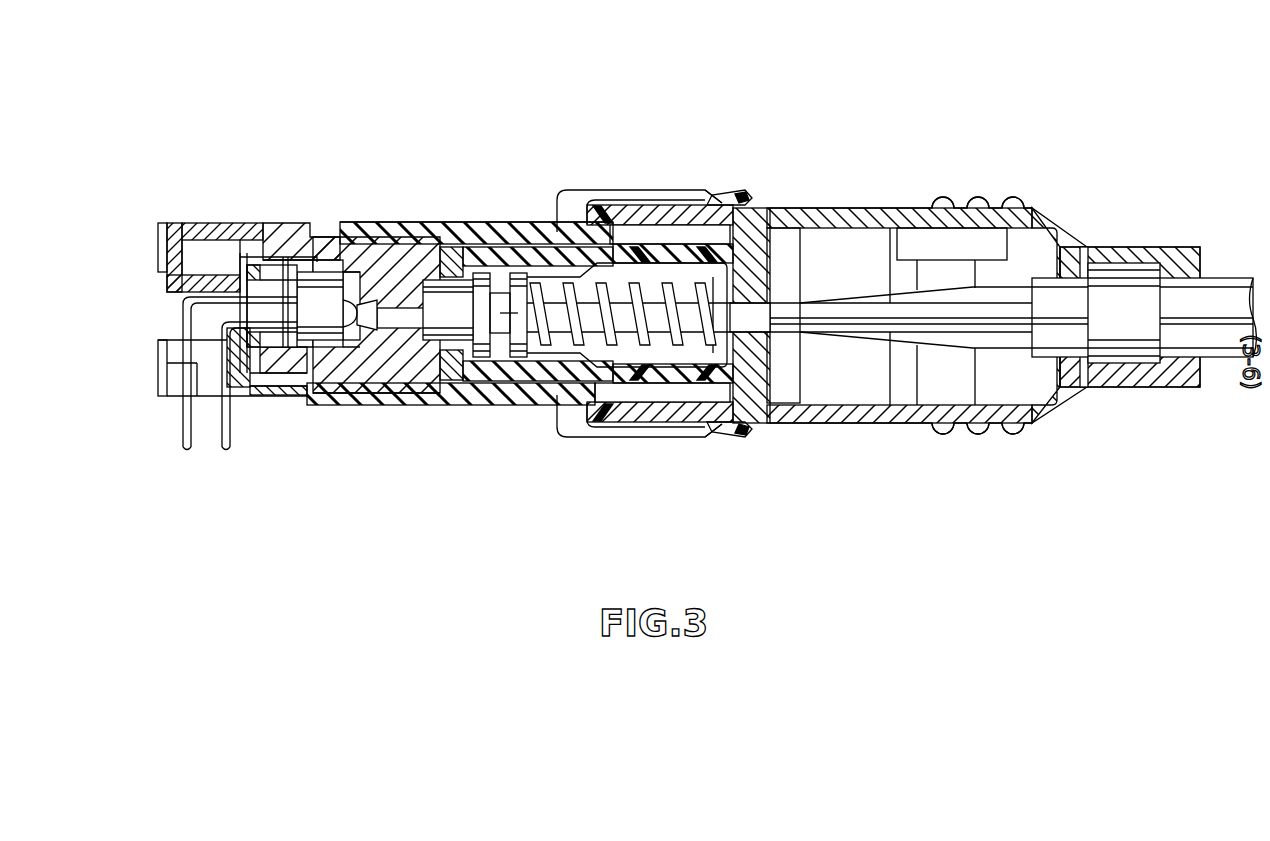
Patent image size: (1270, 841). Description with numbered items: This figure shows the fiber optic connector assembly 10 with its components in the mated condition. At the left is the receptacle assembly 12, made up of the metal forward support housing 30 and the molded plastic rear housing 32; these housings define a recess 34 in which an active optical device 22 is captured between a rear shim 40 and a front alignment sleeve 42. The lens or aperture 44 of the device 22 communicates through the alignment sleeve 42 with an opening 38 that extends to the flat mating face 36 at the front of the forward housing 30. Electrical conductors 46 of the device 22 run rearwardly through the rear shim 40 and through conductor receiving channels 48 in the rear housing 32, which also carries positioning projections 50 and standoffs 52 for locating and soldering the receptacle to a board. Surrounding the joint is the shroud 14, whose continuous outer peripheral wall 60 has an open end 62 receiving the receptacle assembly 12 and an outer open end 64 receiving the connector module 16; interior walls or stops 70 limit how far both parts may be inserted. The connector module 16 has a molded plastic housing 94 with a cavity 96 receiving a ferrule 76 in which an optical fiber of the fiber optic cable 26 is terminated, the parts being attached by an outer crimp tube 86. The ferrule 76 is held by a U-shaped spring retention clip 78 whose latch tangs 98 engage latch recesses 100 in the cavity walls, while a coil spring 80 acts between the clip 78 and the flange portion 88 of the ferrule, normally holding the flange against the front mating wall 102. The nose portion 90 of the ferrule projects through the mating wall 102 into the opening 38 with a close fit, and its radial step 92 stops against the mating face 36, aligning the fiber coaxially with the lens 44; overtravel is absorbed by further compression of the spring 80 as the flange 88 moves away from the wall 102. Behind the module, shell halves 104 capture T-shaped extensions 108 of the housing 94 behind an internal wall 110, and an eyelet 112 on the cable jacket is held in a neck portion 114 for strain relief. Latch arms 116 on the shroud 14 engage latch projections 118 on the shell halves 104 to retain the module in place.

The fiber optic connector assembly 10 is at (910, 101).
The receptacle assembly 12 is at (243, 126).
The shroud 14 is at (351, 225).
The connector module 16 is at (1029, 172).
The active optical device 22 is at (323, 352).
The fiber optic cable 26 is at (1217, 352).
The forward support housing 30 is at (270, 224).
The rear housing 32 is at (178, 222).
The recess 34 is at (305, 352).
The mating face 36 is at (450, 228).
The opening 38 is at (378, 385).
The rear shim 40 is at (243, 332).
The alignment sleeve 42 is at (318, 268).
The lens or aperture 44 is at (347, 332).
The electrical conductors 46 is at (184, 448).
The conductor receiving channels 48 is at (176, 316).
The positioning projections 50 is at (198, 415).
The standoffs 52 is at (170, 393).
The outer peripheral wall 60 is at (661, 230).
The open end 62 is at (678, 385).
The outer open end 64 is at (385, 378).
The interior walls or stops 70 is at (456, 258).
The ferrule 76 is at (467, 365).
The spring retention clip 78 is at (740, 278).
The coil spring 80 is at (654, 290).
The outer crimp tube 86 is at (582, 388).
The flange portion 88 is at (482, 276).
The nose portion 90 is at (388, 303).
The radial step 92 is at (410, 280).
The module housing 94 is at (517, 372).
The cavity 96 is at (540, 380).
The latch tang 98 is at (650, 252).
The latch recess 100 is at (642, 203).
The front mating wall 102 is at (447, 352).
The shell halves 104 is at (1063, 223).
The T-shaped extensions 108 is at (793, 383).
The internal wall 110 is at (767, 382).
The eyelet 112 is at (1117, 278).
The neck portion 114 is at (1130, 380).
The latch arms 116 is at (756, 197).
The latch projections 118 is at (716, 200).